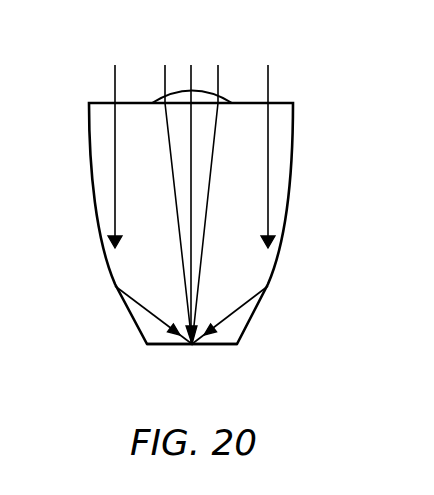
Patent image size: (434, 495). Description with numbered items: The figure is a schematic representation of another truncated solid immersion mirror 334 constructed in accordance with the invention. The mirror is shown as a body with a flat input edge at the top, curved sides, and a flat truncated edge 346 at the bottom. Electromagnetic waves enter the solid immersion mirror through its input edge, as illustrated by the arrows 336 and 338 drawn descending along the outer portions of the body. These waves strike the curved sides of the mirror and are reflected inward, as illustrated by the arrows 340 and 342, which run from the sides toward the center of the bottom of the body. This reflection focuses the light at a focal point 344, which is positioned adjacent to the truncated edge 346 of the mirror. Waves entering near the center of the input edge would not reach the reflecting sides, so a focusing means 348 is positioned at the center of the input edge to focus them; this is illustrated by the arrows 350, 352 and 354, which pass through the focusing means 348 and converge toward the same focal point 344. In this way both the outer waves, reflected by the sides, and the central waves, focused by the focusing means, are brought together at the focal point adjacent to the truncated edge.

The truncated solid immersion mirror 334 is at (287, 215).
The arrow 336 is at (268, 162).
The arrow 338 is at (113, 163).
The arrow 340 is at (257, 313).
The arrow 342 is at (150, 313).
The focal point 344 is at (190, 348).
The truncated edge 346 is at (218, 347).
The focusing means 348 is at (205, 89).
The arrow 350 is at (163, 78).
The arrow 352 is at (189, 78).
The arrow 354 is at (220, 75).